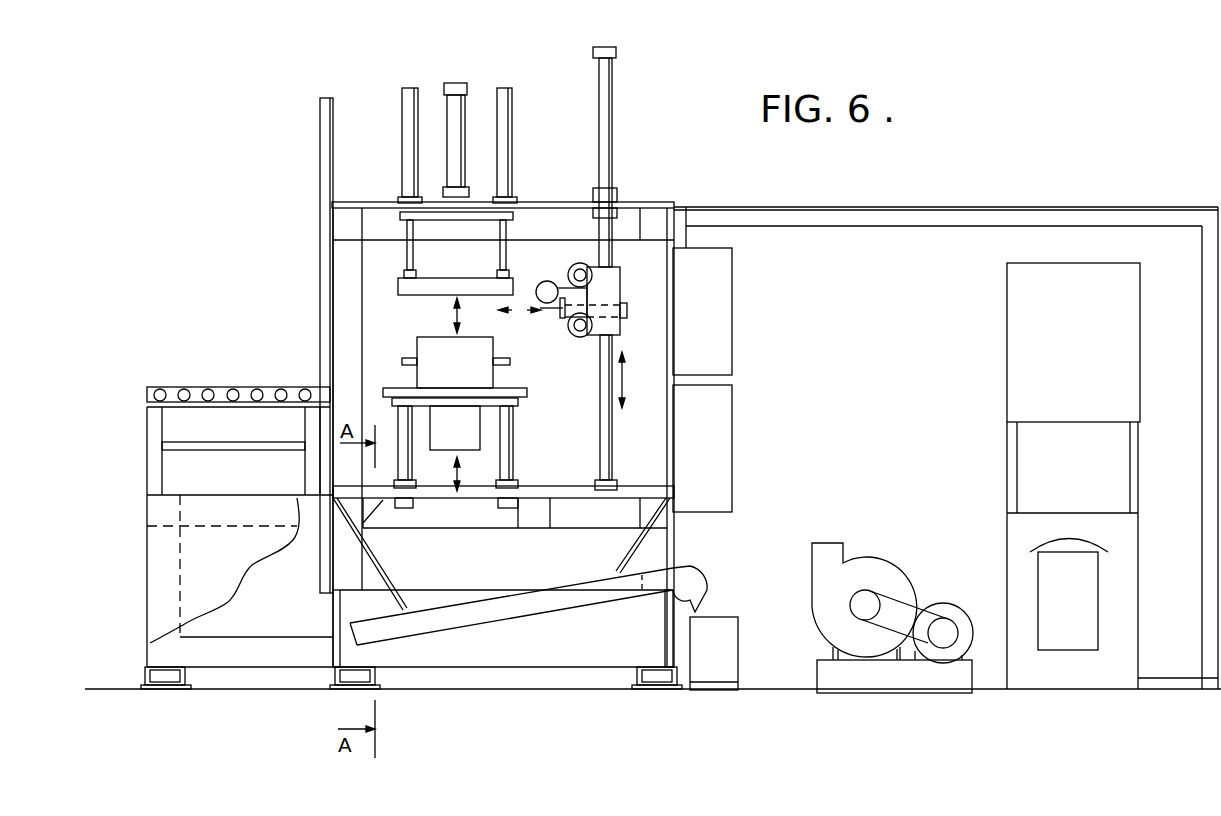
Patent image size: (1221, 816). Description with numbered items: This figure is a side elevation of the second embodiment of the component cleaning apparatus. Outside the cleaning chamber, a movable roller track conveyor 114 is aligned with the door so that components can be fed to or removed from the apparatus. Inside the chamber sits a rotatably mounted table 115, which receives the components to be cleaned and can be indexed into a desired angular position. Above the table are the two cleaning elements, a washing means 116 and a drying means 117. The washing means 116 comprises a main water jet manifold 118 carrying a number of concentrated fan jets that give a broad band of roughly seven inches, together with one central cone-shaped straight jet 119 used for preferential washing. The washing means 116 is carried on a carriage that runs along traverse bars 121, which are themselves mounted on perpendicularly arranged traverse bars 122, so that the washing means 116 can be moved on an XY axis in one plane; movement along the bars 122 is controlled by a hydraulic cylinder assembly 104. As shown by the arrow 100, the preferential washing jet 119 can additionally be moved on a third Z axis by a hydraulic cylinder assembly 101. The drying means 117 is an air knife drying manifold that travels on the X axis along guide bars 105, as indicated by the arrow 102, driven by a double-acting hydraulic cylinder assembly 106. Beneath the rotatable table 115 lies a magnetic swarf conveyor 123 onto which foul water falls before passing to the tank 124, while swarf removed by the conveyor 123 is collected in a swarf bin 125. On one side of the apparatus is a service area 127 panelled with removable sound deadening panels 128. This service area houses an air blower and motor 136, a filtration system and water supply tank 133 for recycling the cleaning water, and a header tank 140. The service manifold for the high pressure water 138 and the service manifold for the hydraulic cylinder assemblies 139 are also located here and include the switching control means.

The arrow 100 is at (519, 313).
The hydraulic cylinder assembly 101 is at (620, 300).
The arrow 102 is at (452, 318).
The hydraulic cylinder assembly 104 is at (613, 117).
The guide bars 105 is at (402, 147).
The double-acting hydraulic cylinder assembly 106 is at (463, 112).
The movable roller track conveyor 114 is at (200, 383).
The rotatably mounted table 115 is at (383, 393).
The washing means 116 is at (538, 275).
The drying means 117 is at (452, 236).
The main water jet manifold 118 is at (549, 282).
The central cone-shaped straight jet 119 is at (552, 315).
The traverse bars 121 is at (583, 268).
The traverse bars 122 is at (600, 418).
The magnetic swarf conveyor 123 is at (548, 587).
The tank 124 is at (614, 650).
The swarf bin 125 is at (727, 660).
The service area 127 is at (940, 238).
The removable sound deadening panels 128 is at (1152, 208).
The filtration system and water supply tank 133 is at (1098, 668).
The air blower and motor 136 is at (900, 677).
The service manifold for high pressure water 138 is at (715, 342).
The service manifold for hydraulic cylinder assemblies 139 is at (713, 445).
The header tank 140 is at (1086, 350).